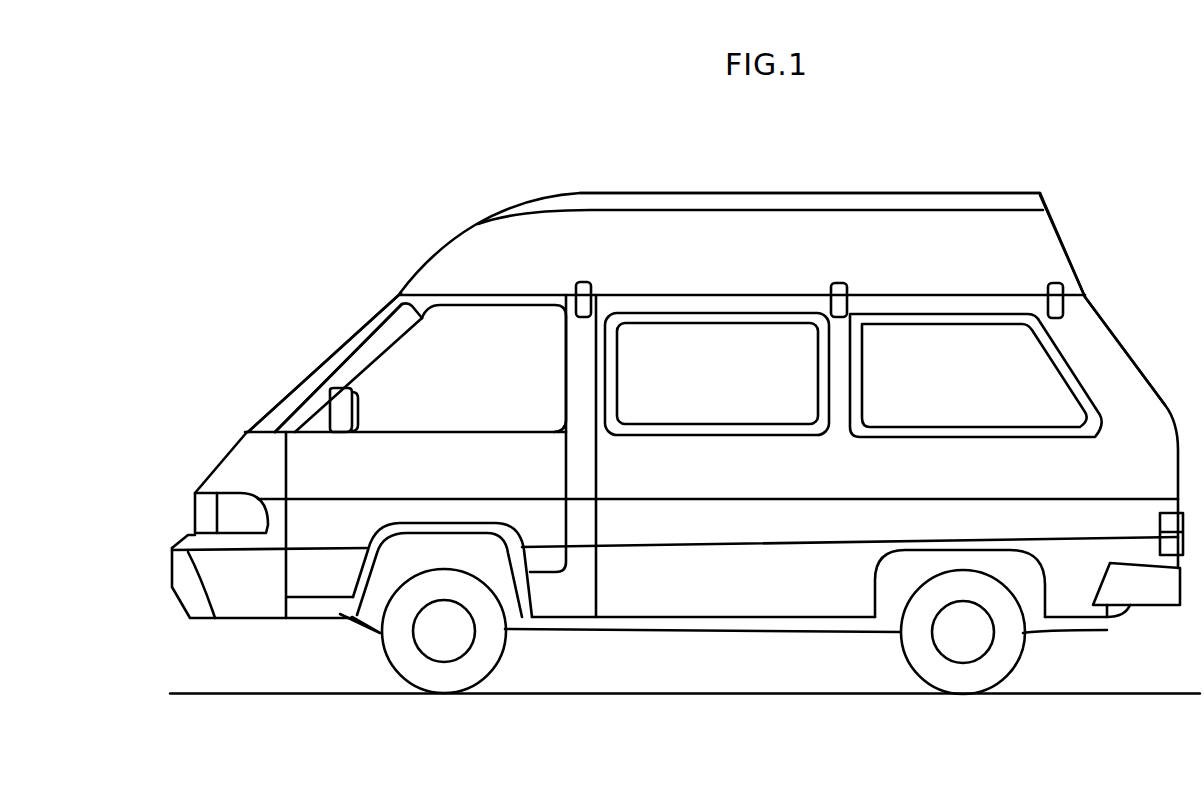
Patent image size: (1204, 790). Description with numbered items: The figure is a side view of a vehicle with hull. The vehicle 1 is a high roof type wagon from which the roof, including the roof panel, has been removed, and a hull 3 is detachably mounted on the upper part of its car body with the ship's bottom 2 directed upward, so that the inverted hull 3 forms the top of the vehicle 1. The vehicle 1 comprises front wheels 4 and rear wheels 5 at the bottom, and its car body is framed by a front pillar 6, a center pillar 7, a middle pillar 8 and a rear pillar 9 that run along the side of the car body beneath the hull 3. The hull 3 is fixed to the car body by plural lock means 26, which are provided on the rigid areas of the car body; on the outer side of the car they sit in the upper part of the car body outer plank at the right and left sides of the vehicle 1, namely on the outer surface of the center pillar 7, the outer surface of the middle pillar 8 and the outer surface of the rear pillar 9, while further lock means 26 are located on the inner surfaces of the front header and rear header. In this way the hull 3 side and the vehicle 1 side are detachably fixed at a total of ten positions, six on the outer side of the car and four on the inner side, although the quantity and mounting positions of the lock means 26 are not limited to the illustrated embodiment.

The vehicle 1 is at (356, 303).
The ship's bottom 2 is at (749, 193).
The hull 3 is at (1037, 238).
The front wheels 4 is at (397, 659).
The rear wheels 5 is at (917, 657).
The front pillar 6 is at (353, 370).
The center pillar 7 is at (562, 370).
The middle pillar 8 is at (824, 380).
The rear pillar 9 is at (1100, 358).
The lock means 26 is at (592, 283).